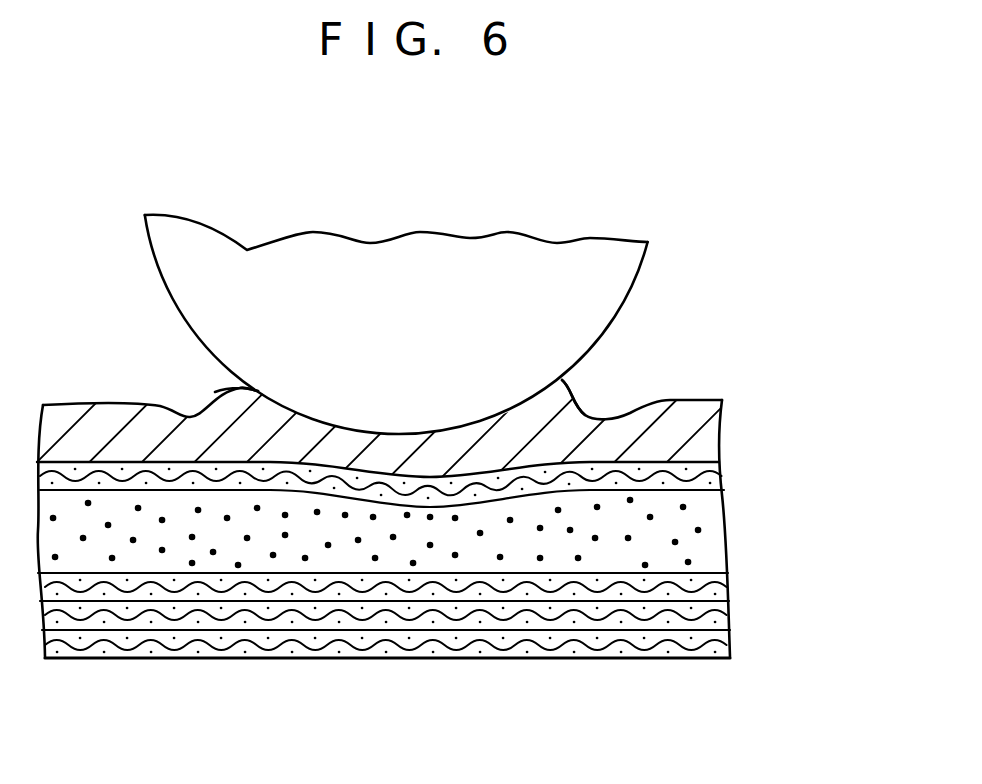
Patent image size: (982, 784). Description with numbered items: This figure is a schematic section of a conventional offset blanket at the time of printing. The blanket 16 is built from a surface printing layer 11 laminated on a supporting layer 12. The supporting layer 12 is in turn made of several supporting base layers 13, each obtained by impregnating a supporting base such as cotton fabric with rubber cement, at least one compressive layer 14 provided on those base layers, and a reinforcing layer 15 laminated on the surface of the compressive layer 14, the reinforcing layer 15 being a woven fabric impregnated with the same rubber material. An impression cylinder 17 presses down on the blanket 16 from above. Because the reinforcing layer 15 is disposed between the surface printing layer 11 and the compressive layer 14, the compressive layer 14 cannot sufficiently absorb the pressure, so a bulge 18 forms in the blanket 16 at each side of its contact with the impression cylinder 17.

The surface printing layer 11 is at (707, 438).
The supporting layer 12 is at (435, 583).
The supporting base layers 13 is at (402, 613).
The compressive layer 14 is at (518, 547).
The reinforcing layer 15 is at (192, 485).
The blanket 16 is at (466, 573).
The impression cylinder 17 is at (607, 277).
The bulge 18 is at (203, 393).